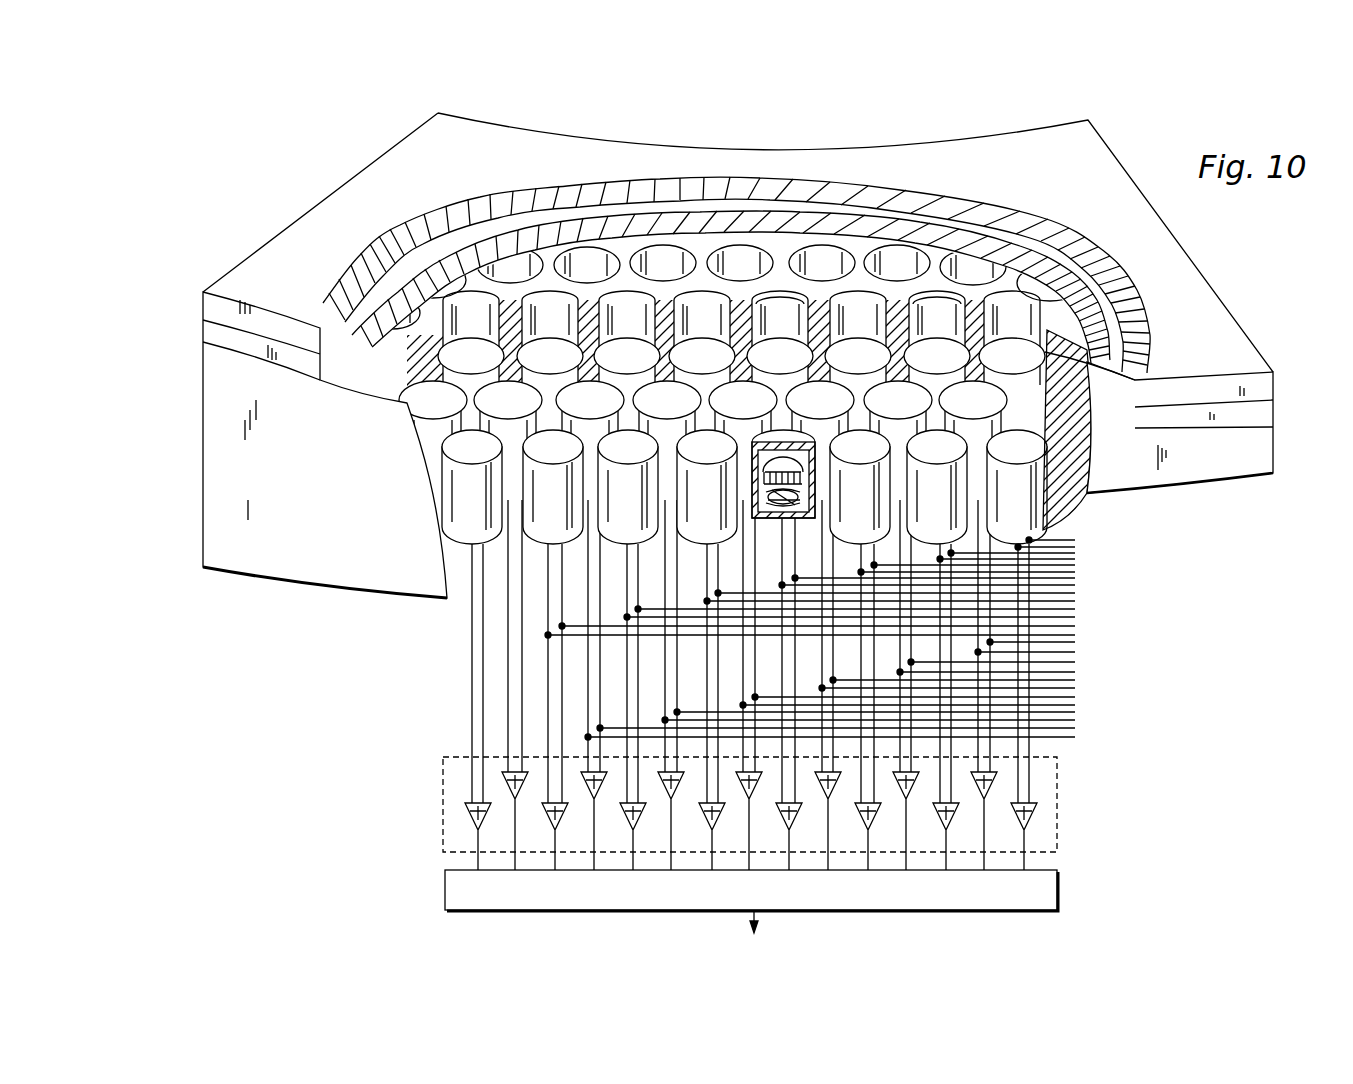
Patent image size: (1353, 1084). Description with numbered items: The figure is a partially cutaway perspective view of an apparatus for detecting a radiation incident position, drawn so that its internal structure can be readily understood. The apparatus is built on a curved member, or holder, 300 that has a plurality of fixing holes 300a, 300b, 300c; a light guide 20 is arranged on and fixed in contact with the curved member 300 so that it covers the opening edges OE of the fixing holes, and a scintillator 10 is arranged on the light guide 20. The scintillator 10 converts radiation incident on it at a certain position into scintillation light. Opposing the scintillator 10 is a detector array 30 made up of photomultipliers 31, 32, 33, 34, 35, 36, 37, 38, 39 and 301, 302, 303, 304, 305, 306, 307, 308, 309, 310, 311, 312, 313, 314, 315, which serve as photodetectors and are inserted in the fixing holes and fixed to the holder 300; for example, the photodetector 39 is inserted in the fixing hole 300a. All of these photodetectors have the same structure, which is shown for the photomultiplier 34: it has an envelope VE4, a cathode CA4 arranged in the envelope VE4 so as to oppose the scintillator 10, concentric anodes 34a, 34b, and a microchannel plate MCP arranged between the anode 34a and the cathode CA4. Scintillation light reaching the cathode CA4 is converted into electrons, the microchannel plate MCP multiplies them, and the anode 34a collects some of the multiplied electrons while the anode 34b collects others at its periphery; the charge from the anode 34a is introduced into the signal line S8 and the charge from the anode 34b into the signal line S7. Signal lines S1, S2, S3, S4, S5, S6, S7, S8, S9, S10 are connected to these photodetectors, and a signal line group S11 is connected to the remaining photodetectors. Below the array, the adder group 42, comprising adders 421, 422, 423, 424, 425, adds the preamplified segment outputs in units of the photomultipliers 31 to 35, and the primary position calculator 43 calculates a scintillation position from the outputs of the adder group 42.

The scintillator 10 is at (213, 310).
The light guide 20 is at (212, 333).
The detector array 30 is at (628, 305).
The curved member (holder) 300 is at (302, 452).
The fixing hole 300a is at (945, 298).
The fixing hole 300b is at (883, 258).
The fixing hole 300c is at (783, 300).
The opening edge OE is at (700, 258).
The photomultiplier 301 is at (455, 458).
The photomultiplier 302 is at (536, 458).
The photomultiplier 303 is at (611, 458).
The photomultiplier 304 is at (416, 411).
The photomultiplier 305 is at (491, 411).
The photomultiplier 306 is at (573, 411).
The photomultiplier 307 is at (650, 411).
The photomultiplier 308 is at (726, 411).
The photomultiplier 309 is at (454, 367).
The photomultiplier 310 is at (533, 367).
The photomultiplier 311 is at (610, 367).
The photomultiplier 312 is at (685, 367).
The photomultiplier 313 is at (763, 367).
The photomultiplier 314 is at (956, 411).
The photomultiplier 315 is at (1030, 358).
The photomultiplier 31 is at (1005, 458).
The photomultiplier 32 is at (925, 458).
The photomultiplier 33 is at (848, 458).
The photomultiplier 34 is at (778, 503).
The anode 34a is at (812, 490).
The anode 34b is at (814, 503).
The photomultiplier 35 is at (695, 458).
The photomultiplier 36 is at (886, 411).
The photomultiplier 37 is at (808, 411).
The photomultiplier 38 is at (846, 367).
The photomultiplier 39 is at (925, 367).
The cathode CA4 is at (810, 462).
The microchannel plate MCP is at (757, 478).
The envelope VE4 is at (758, 507).
The signal line S1 is at (1075, 540).
The signal line S2 is at (1075, 547).
The signal line S3 is at (1075, 553).
The signal line S4 is at (1075, 559).
The signal line S5 is at (1075, 565).
The signal line S6 is at (1075, 572).
The signal line S7 is at (1075, 578).
The signal line S8 is at (1075, 585).
The signal line S9 is at (1075, 593).
The signal line S10 is at (1076, 601).
The signal line group S11 is at (1076, 737).
The adder group 42 is at (722, 813).
The adder 421 is at (716, 822).
The adder 422 is at (793, 822).
The adder 423 is at (870, 822).
The adder 424 is at (948, 822).
The adder 425 is at (1026, 822).
The primary position calculator 43 is at (445, 884).